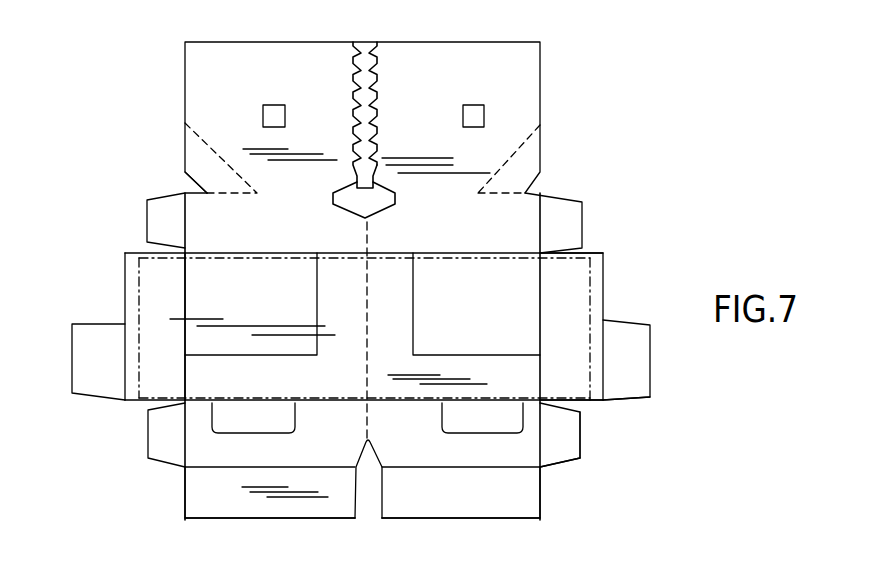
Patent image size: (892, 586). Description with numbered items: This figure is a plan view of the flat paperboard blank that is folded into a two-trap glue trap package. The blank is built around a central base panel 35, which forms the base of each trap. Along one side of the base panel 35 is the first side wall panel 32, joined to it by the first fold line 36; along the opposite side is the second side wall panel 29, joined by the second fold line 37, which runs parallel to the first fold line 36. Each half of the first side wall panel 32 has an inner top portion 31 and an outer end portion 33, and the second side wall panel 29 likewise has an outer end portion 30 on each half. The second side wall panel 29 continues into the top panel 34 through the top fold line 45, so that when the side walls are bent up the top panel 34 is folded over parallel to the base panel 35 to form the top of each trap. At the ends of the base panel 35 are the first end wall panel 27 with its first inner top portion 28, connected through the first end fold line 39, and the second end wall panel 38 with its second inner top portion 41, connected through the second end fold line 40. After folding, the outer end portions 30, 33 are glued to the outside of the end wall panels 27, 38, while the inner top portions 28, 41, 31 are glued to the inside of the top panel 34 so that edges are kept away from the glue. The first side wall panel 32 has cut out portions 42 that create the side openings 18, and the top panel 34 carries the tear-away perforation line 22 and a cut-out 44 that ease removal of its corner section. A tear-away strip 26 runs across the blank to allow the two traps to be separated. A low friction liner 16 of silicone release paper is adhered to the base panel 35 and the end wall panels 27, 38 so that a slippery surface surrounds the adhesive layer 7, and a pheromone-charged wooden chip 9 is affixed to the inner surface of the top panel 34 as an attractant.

The tear-away strip 26 is at (357, 65).
The top panel 34 is at (518, 78).
The wooden chip 9 is at (478, 118).
The tear-away perforation line 22 is at (213, 154).
The cut-out 44 is at (192, 174).
The outer end portion 30 is at (157, 225).
The top fold line 45 is at (460, 175).
The second side wall panel 29 is at (530, 215).
The second fold line 37 is at (515, 252).
The first end fold line 39 is at (540, 270).
The base panel 35 is at (537, 288).
The adhesive layer 7 is at (508, 317).
The first end wall panel 27 is at (597, 365).
The first inner top portion 28 is at (630, 383).
The low friction liner 16 is at (563, 387).
The cut out portions 42 is at (497, 428).
The side opening 18 is at (580, 453).
The outer end portion 33 is at (552, 458).
The first side wall panel 32 is at (500, 455).
The inner top portion 31 is at (528, 497).
The first fold line 36 is at (345, 402).
The second inner top portion 41 is at (85, 378).
The second end wall panel 38 is at (132, 379).
The second end fold line 40 is at (185, 378).